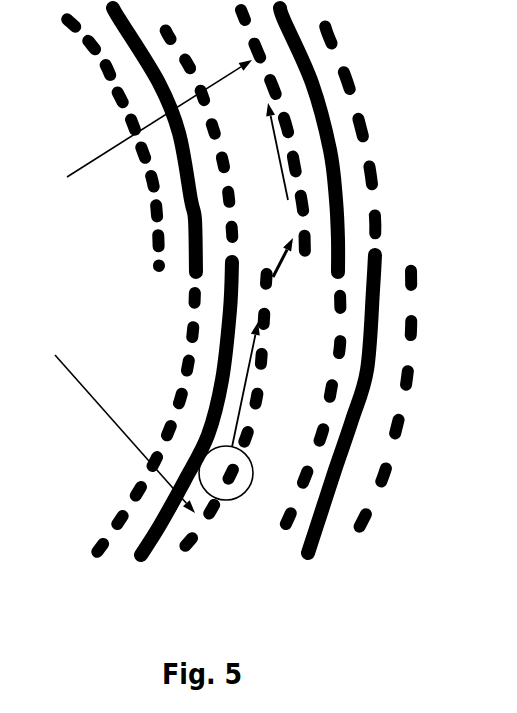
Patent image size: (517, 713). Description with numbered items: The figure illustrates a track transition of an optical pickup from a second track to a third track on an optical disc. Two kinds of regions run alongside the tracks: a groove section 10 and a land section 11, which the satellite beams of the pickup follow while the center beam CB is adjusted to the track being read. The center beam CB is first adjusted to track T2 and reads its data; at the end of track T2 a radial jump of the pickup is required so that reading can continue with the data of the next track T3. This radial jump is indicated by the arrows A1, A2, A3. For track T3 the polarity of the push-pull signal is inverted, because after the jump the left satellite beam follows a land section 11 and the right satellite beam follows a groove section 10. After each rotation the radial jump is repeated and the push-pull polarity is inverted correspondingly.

The groove section 10 is at (313, 555).
The land section 11 is at (222, 548).
The track T2 is at (107, 419).
The track T3 is at (140, 130).
The arrow A1 is at (250, 358).
The arrow A2 is at (277, 268).
The arrow A3 is at (278, 150).
The center beam CB is at (253, 468).